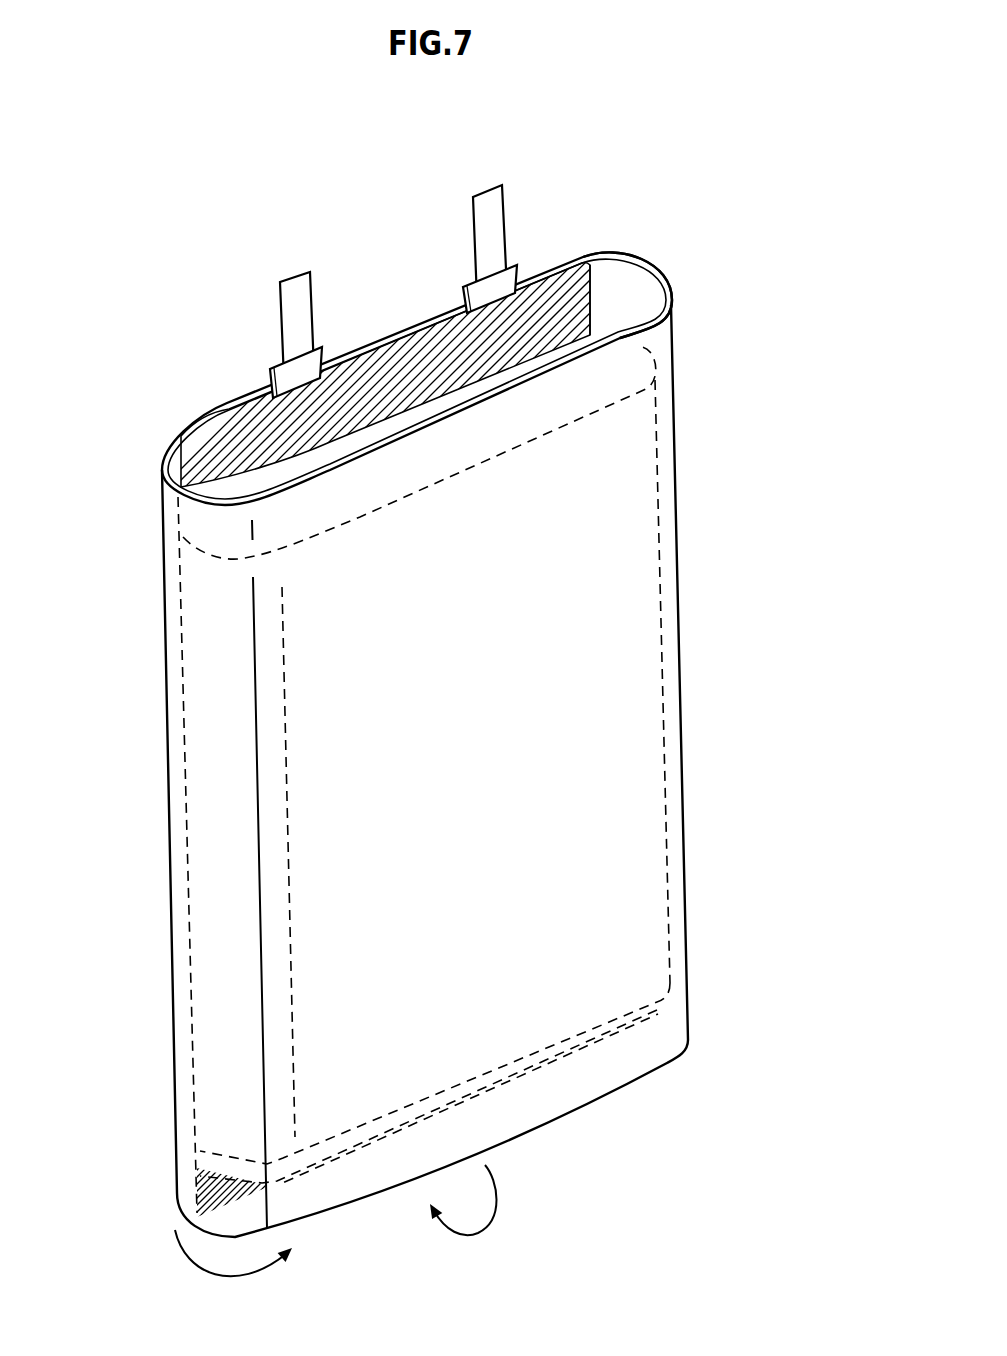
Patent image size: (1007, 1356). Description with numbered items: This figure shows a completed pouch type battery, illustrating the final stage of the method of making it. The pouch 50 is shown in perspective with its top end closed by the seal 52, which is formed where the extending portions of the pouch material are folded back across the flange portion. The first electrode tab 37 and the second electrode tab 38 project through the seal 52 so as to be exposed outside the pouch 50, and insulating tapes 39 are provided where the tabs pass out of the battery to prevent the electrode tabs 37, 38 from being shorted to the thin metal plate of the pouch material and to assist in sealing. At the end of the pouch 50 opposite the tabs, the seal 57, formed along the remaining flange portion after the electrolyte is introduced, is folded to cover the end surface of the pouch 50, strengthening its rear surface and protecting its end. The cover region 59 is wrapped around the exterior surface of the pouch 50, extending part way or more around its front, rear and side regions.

The first electrode tab 37 is at (297, 293).
The second electrode tab 38 is at (488, 209).
The insulating tape 39 is at (277, 372).
The pouch 50 is at (688, 593).
The seal 52 is at (246, 438).
The seal 57 is at (213, 1193).
The cover region 59 is at (643, 298).